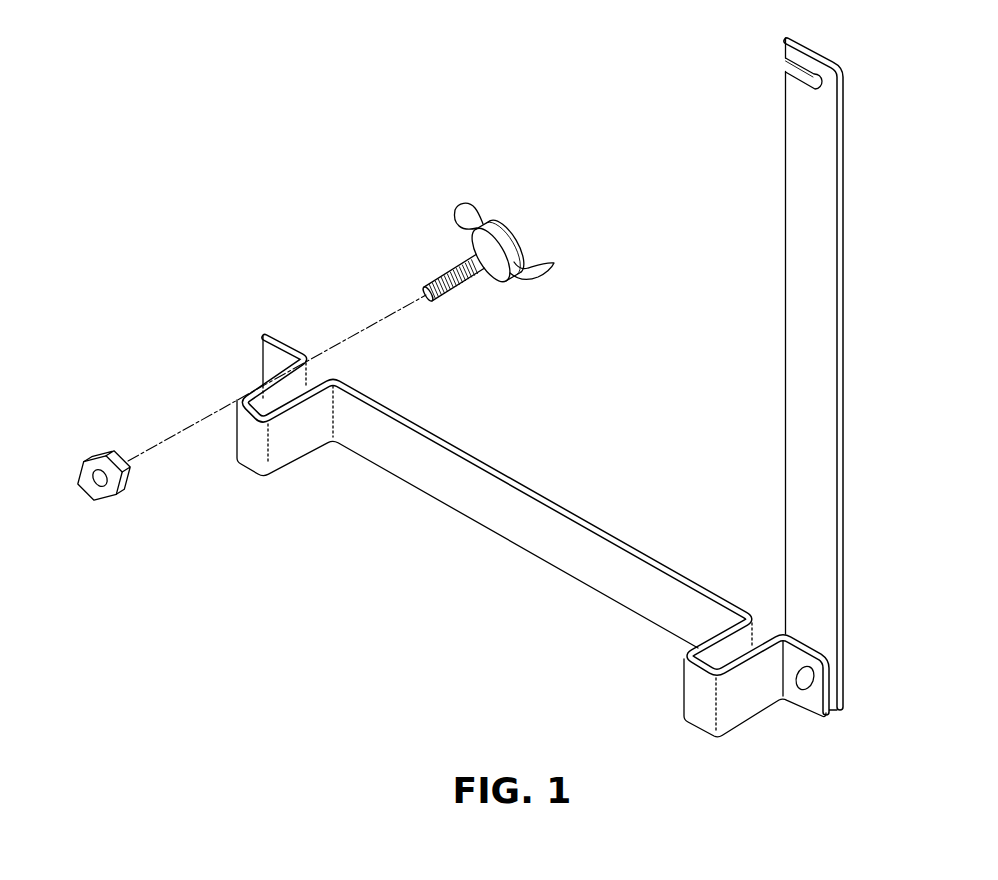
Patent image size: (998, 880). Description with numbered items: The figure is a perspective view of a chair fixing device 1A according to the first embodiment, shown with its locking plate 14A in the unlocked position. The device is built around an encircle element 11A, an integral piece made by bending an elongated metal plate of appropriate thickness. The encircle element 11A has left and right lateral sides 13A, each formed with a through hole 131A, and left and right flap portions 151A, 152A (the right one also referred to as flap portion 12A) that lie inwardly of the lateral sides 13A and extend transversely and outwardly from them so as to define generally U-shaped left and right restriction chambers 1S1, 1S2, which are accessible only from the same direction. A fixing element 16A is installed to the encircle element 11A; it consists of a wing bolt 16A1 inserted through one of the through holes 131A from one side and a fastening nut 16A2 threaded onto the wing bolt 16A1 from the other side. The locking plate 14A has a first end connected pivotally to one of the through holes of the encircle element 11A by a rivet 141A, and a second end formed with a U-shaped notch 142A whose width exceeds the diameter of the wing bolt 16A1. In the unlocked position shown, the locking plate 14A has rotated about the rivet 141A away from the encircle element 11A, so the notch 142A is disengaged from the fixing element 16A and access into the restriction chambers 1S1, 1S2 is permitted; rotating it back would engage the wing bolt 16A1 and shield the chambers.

The chair fixing device 1A is at (882, 163).
The encircle element 11A is at (505, 512).
The right flap portion 12A is at (745, 688).
The lateral side 13A is at (278, 350).
The locking plate 14A is at (825, 400).
The through hole 131A is at (280, 370).
The rivet 141A is at (812, 676).
The U-shaped notch 142A is at (786, 63).
The left flap portion 151A is at (300, 445).
The right flap portion 152A is at (712, 633).
The fixing element 16A is at (527, 208).
The wing bolt 16A1 is at (462, 283).
The fastening nut 16A2 is at (118, 492).
The left restriction chamber 1S1 is at (268, 395).
The right restriction chamber 1S2 is at (728, 652).